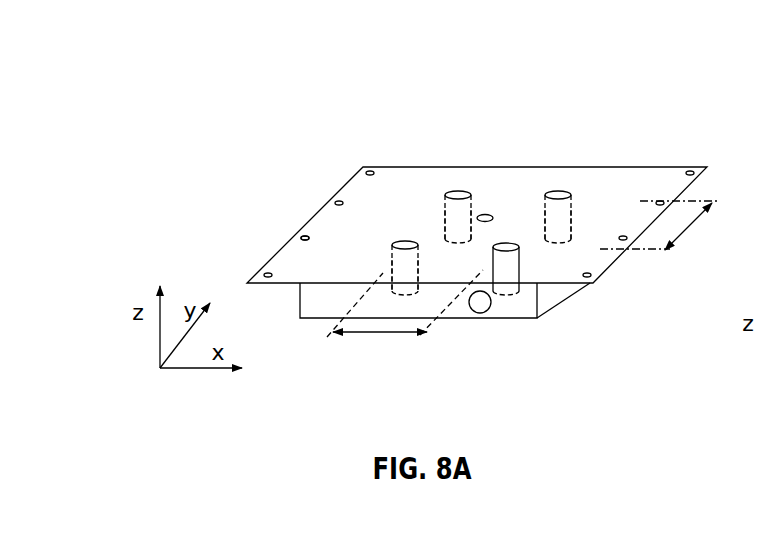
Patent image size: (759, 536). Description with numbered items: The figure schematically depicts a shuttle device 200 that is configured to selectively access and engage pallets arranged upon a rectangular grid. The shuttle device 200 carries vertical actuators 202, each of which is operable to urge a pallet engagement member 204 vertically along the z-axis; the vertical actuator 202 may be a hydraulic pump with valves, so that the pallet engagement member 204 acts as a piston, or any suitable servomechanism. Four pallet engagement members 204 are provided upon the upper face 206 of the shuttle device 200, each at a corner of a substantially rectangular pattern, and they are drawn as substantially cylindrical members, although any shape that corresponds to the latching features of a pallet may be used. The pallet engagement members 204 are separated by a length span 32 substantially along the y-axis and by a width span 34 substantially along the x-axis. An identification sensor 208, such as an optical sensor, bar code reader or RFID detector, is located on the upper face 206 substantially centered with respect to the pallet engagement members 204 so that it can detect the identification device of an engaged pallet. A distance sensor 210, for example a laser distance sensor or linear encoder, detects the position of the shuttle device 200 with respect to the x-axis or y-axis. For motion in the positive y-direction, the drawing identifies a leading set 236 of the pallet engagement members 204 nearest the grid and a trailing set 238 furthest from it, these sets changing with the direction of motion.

The shuttle device 200 is at (284, 72).
The vertical actuator 202 is at (444, 212).
The pallet engagement member 204 is at (458, 191).
The upper face 206 is at (473, 270).
The identification sensor 208 is at (486, 214).
The distance sensor 210 is at (481, 313).
The leading set 236 is at (367, 204).
The trailing set 238 is at (324, 237).
The length span 32 is at (684, 228).
The width span 34 is at (378, 334).